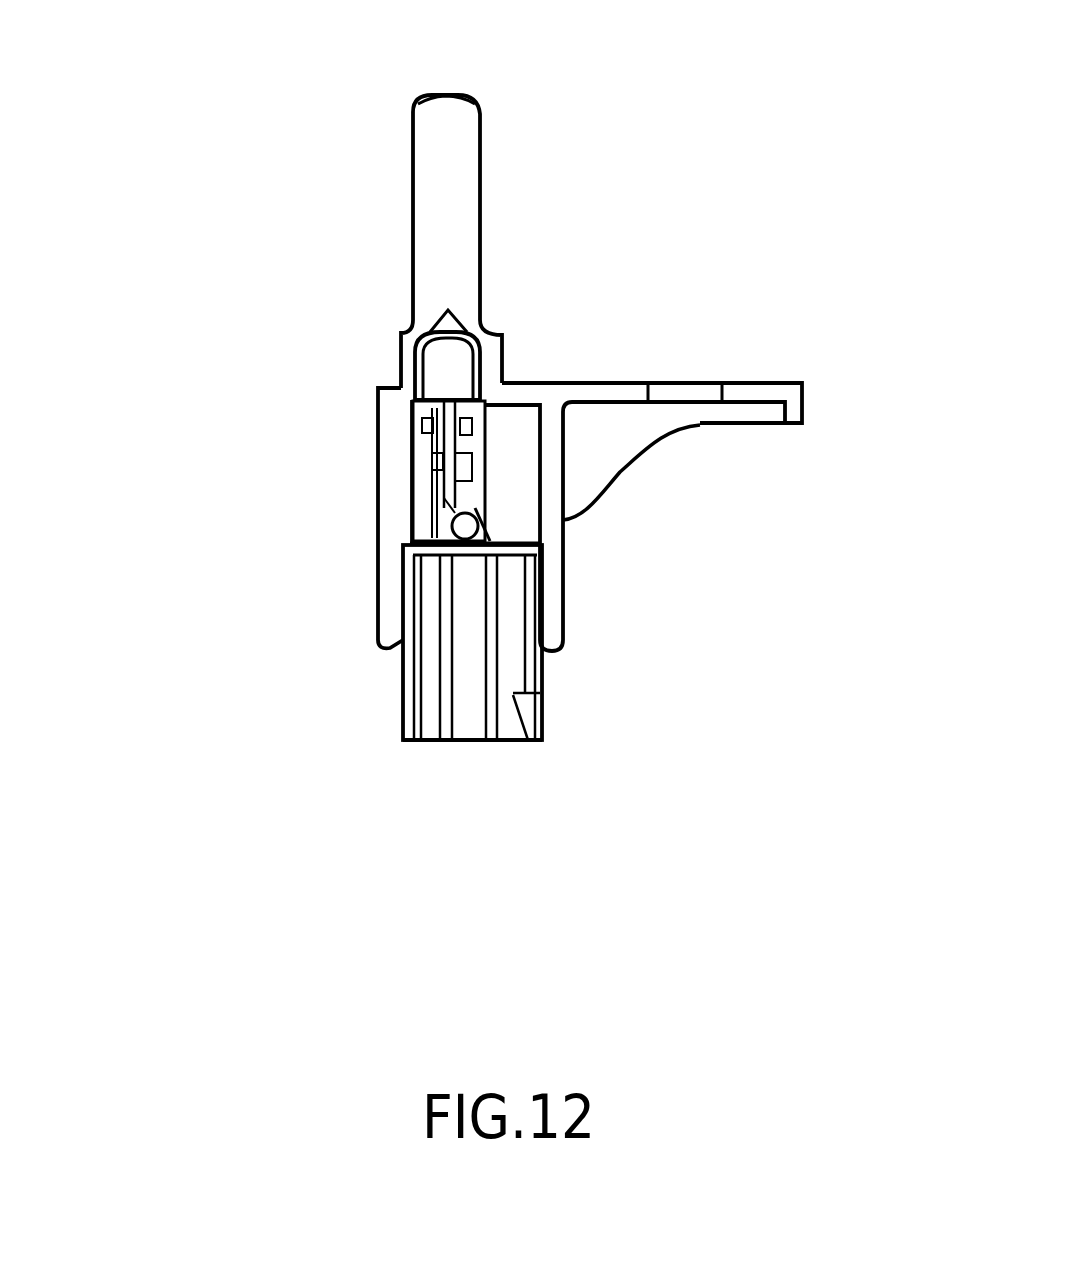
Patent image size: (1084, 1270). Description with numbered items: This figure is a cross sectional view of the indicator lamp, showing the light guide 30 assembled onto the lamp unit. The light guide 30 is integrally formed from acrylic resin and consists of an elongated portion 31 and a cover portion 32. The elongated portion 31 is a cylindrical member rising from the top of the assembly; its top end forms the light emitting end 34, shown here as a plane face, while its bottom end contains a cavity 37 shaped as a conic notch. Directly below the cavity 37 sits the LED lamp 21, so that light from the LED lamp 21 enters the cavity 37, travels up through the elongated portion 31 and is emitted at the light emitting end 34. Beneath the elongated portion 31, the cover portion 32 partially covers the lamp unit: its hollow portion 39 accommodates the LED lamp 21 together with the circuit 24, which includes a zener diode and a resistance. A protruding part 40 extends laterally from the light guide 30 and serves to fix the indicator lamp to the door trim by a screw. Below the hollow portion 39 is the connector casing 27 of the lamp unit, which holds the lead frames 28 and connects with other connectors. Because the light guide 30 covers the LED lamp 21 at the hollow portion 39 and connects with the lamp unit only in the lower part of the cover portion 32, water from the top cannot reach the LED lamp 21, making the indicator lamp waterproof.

The light guide 30 is at (302, 355).
The elongated portion 31 is at (443, 157).
The light emitting end 34 is at (413, 103).
The cavity 37 is at (450, 325).
The LED lamp 21 is at (450, 358).
The hollow portion 39 is at (488, 375).
The protruding part 40 is at (683, 393).
The cover portion 32 is at (397, 447).
The circuit 24 is at (490, 465).
The connector casing 27 is at (503, 658).
The lead frames 28 is at (485, 740).